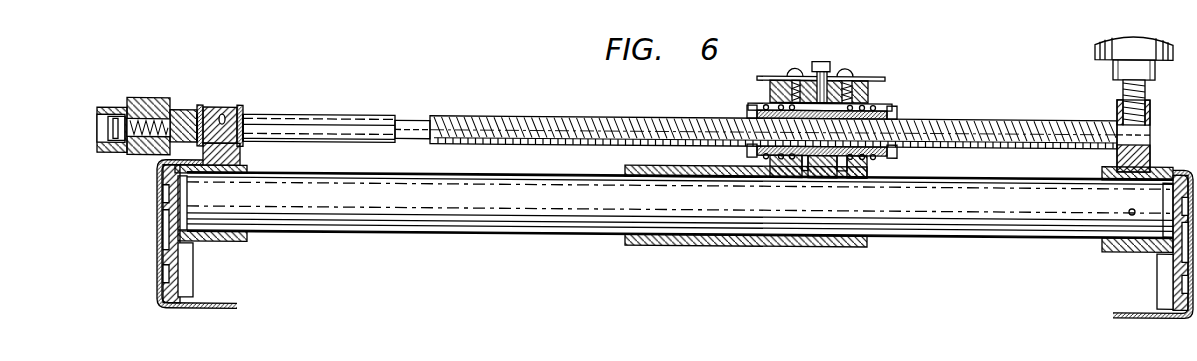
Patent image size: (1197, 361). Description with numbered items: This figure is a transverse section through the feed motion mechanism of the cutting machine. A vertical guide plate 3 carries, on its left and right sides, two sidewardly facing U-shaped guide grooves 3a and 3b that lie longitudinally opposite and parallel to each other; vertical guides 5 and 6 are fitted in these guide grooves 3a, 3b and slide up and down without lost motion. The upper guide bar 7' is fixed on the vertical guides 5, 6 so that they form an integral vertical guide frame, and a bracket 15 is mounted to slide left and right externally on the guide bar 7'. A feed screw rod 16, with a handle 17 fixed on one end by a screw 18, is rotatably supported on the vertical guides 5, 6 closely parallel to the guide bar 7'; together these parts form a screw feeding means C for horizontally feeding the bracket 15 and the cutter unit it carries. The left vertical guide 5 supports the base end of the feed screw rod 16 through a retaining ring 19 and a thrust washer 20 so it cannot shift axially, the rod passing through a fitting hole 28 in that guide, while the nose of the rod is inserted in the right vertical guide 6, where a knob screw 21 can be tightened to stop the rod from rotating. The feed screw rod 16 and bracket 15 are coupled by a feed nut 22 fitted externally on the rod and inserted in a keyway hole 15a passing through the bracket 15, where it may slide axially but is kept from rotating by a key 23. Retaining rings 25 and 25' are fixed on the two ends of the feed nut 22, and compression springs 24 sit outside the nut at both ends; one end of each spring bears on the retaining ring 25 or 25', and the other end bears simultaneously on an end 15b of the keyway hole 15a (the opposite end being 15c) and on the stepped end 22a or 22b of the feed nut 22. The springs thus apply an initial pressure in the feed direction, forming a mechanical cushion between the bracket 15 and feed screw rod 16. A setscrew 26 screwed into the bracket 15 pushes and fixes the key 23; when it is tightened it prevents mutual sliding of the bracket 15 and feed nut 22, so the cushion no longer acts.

The vertical guide plate 3 is at (192, 310).
The guide groove 3a is at (160, 229).
The guide groove 3b is at (1168, 256).
The vertical guide 5 is at (185, 268).
The vertical guide 6 is at (1162, 288).
The guide bar 7' is at (675, 229).
The bracket 15 is at (729, 243).
The keyway hole 15a is at (818, 164).
The end of keyway hole 15b is at (800, 168).
The bracket right portion 15c is at (858, 162).
The feed screw rod 16 is at (516, 120).
The handle 17 is at (143, 100).
The screw 18 is at (107, 127).
The retaining ring 19 is at (198, 108).
The thrust washer 20 is at (200, 106).
The knob screw 21 is at (1094, 44).
The feed nut 22 is at (897, 106).
The stepped end of feed nut 22a is at (804, 157).
The stepped end of feed nut 22b is at (842, 157).
The key 23 is at (824, 95).
The compression spring 24 is at (766, 92).
The retaining ring 25 is at (746, 96).
The retaining ring 25' is at (901, 91).
The setscrew 26 is at (810, 60).
The fitting hole 28 is at (222, 115).
The screw feeding means C is at (348, 113).